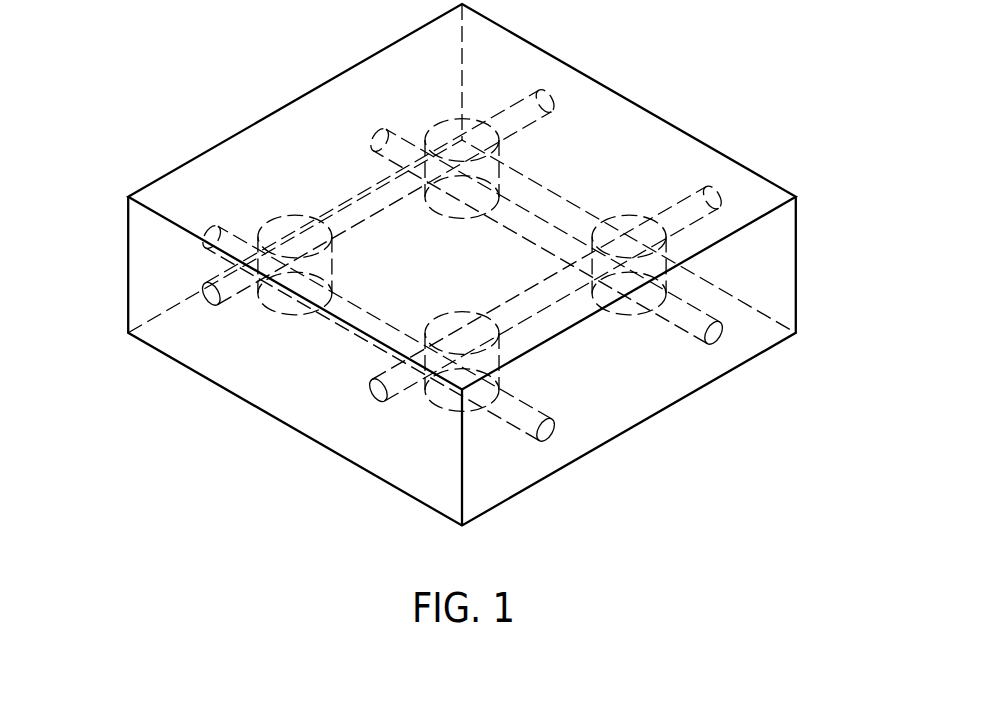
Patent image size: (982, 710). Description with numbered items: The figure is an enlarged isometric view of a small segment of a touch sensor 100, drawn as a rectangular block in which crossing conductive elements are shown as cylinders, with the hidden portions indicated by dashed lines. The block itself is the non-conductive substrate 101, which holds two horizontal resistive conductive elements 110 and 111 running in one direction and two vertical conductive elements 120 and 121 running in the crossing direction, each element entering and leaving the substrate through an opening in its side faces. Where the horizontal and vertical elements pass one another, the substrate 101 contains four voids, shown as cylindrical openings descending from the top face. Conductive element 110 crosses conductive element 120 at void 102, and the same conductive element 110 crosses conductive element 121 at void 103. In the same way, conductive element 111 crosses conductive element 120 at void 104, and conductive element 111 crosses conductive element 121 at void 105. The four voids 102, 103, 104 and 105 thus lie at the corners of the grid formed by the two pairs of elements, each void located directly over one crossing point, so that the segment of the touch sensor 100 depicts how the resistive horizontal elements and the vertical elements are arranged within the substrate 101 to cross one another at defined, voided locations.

The touch sensor 100 is at (183, 72).
The non-conductive substrate 101 is at (778, 333).
The void 102 is at (447, 409).
The void 103 is at (277, 315).
The void 104 is at (632, 213).
The void 105 is at (471, 118).
The horizontal resistive conductive element 110 is at (555, 438).
The horizontal resistive conductive element 111 is at (721, 343).
The vertical conductive element 120 is at (374, 402).
The vertical conductive element 121 is at (205, 305).